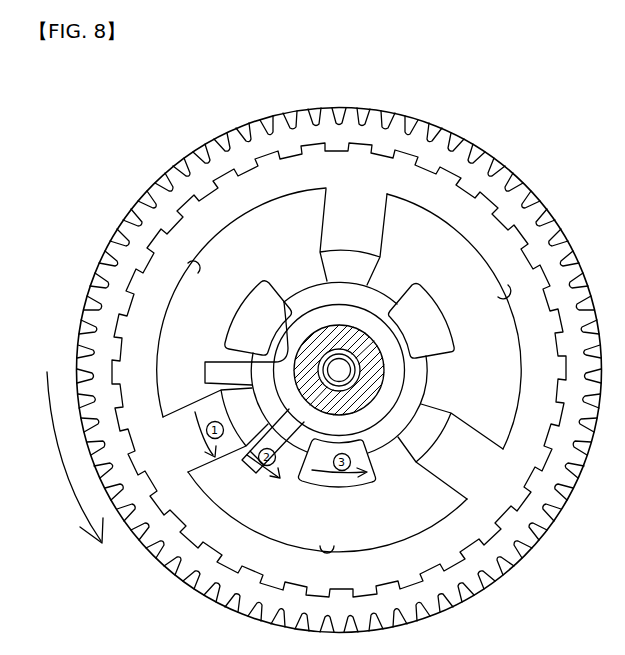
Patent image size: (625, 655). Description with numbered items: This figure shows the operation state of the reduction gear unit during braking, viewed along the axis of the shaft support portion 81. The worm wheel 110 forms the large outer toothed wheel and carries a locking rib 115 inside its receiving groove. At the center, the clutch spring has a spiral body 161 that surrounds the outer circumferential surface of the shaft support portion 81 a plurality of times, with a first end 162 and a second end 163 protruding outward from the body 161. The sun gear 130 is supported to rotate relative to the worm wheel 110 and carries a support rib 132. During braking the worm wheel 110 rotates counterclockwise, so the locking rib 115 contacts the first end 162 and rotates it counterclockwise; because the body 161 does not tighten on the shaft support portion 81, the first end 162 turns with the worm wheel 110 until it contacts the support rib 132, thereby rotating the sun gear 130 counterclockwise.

The worm wheel 110 is at (128, 200).
The locking rib 115 is at (187, 453).
The sun gear 130 is at (300, 295).
The body 161 is at (366, 318).
The second end 163 is at (215, 362).
The first end 162 is at (258, 474).
The shaft support portion 81 is at (371, 379).
The support rib 132 is at (363, 488).